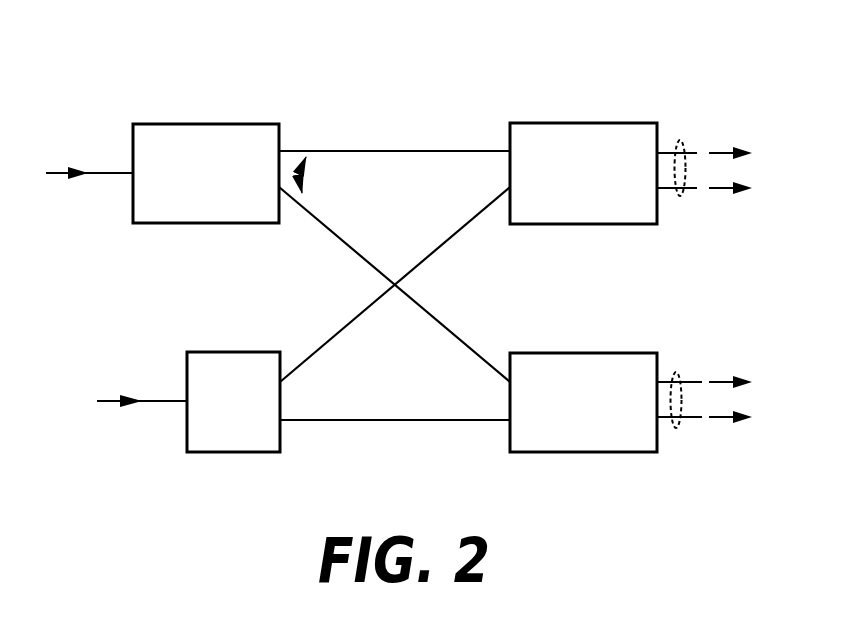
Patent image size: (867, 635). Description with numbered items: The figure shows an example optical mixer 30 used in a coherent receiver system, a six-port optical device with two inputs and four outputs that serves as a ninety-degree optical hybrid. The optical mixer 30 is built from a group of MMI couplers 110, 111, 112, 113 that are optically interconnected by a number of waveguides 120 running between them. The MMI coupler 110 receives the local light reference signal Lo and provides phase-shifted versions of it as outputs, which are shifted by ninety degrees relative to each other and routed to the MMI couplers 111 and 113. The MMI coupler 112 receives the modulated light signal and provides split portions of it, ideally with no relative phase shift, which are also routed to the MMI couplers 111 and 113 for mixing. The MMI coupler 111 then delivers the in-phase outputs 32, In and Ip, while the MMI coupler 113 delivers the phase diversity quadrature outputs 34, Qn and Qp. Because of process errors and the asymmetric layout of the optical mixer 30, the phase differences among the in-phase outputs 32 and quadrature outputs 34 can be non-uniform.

The optical mixer 30 is at (106, 50).
The in-phase outputs 32 is at (680, 140).
The quadrature outputs 34 is at (677, 428).
The MMI coupler 110 is at (206, 173).
The MMI coupler 111 is at (583, 173).
The MMI coupler 112 is at (233, 402).
The MMI coupler 113 is at (583, 402).
The waveguides 120 is at (360, 287).